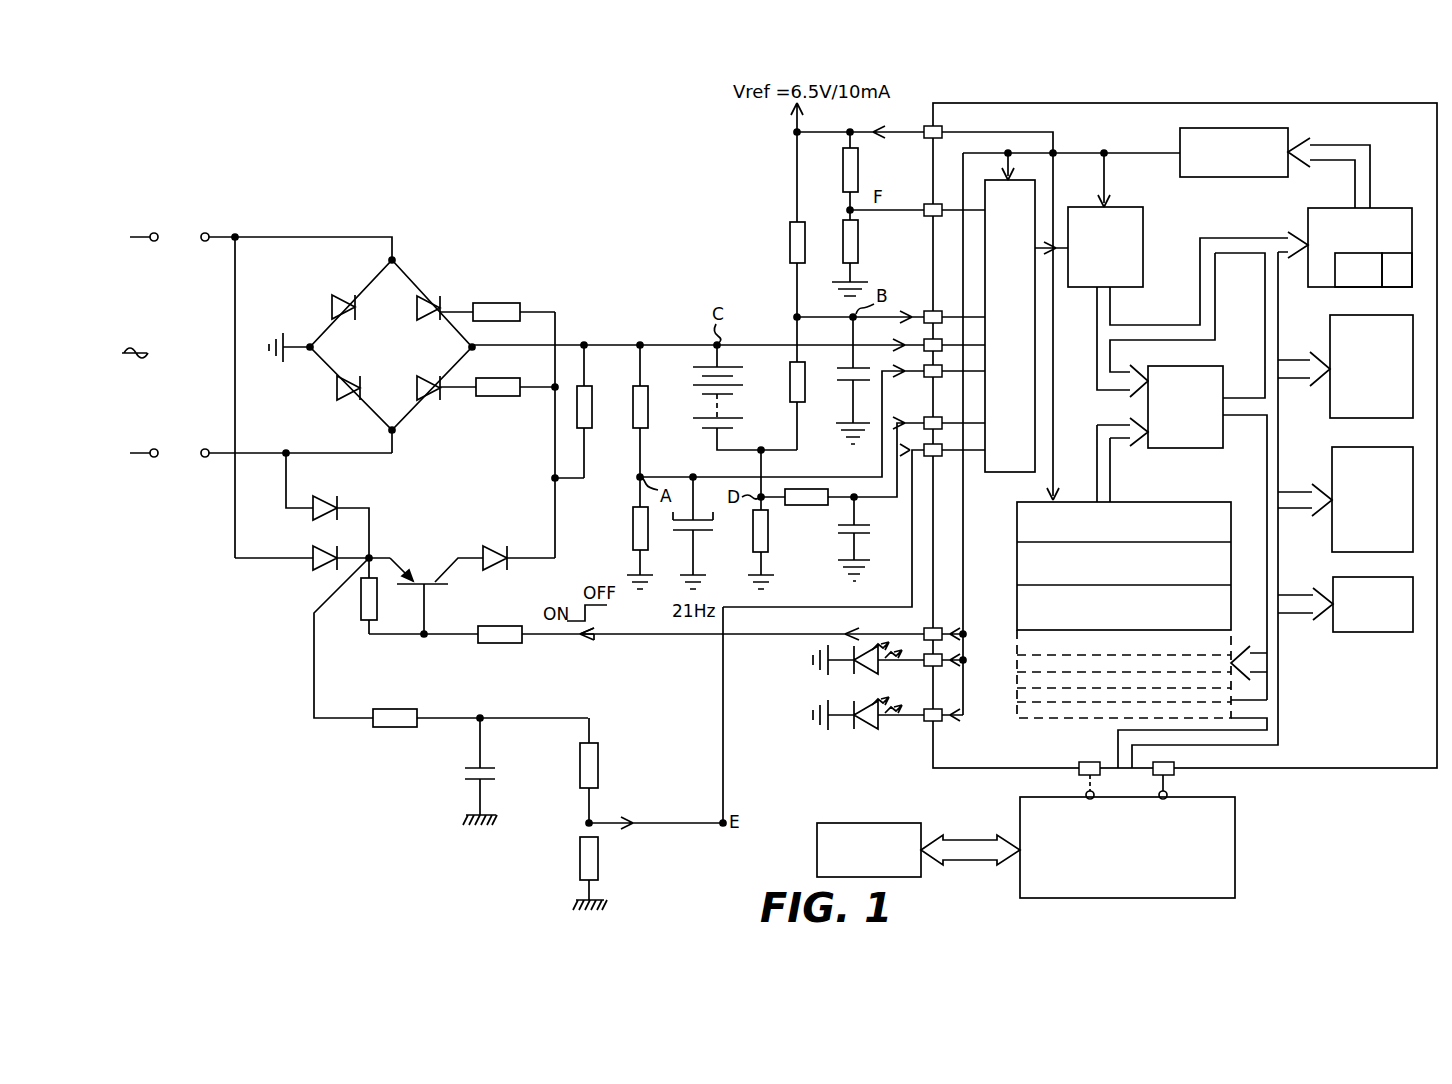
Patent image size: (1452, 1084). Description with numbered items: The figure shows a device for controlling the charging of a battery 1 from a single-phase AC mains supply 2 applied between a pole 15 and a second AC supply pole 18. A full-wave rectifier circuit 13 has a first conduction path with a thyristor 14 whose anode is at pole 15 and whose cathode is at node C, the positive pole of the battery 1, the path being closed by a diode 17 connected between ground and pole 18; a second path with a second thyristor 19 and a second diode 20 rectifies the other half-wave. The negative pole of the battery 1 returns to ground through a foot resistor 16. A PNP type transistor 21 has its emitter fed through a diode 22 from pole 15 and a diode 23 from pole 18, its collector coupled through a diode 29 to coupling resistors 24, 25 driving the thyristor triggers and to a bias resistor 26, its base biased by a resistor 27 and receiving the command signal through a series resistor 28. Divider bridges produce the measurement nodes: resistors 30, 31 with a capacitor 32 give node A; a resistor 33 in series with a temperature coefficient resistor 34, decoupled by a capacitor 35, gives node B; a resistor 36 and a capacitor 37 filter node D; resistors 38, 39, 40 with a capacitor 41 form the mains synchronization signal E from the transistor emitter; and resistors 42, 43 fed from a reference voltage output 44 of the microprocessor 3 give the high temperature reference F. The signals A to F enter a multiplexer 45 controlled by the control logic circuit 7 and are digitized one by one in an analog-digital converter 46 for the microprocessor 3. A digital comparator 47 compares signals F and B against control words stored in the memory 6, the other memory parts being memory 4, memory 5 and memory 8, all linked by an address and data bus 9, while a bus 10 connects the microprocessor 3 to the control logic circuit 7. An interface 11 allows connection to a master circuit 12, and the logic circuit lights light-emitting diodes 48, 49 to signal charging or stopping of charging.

The battery 1 is at (670, 368).
The AC mains supply 2 is at (135, 349).
The microprocessor 3 is at (1390, 220).
The memory 4 is at (1410, 334).
The memory 5 is at (1412, 466).
The memory 6 is at (1217, 508).
The control logic circuit 7 is at (1284, 148).
The memory 8 is at (1410, 592).
The address and data bus 9 is at (1230, 238).
The bus 10 is at (1334, 164).
The interface 11 is at (1235, 822).
The master circuit 12 is at (886, 823).
The full-wave rectifier circuit 13 is at (372, 345).
The thyristor 14 is at (444, 308).
The pole 15 is at (207, 236).
The foot resistor 16 is at (748, 544).
The diode 17 is at (344, 398).
The second AC supply pole 18 is at (203, 458).
The second thyristor 19 is at (450, 414).
The second diode 20 is at (332, 308).
The PNP type transistor 21 is at (416, 582).
The diode 22 is at (312, 576).
The diode 23 is at (320, 511).
The coupling resistor 24 is at (512, 303).
The coupling resistor 25 is at (503, 396).
The bias resistor 26 is at (597, 408).
The resistor 27 is at (358, 626).
The series resistor 28 is at (505, 646).
The diode 29 is at (495, 548).
The resistor 30 is at (648, 418).
The resistor 31 is at (632, 526).
The capacitor 32 is at (677, 529).
The resistor 33 is at (790, 241).
The temperature coefficient resistor 34 is at (790, 384).
The capacitor 35 is at (850, 380).
The resistor 36 is at (801, 505).
The capacitor 37 is at (865, 534).
The resistor 38 is at (388, 728).
The resistor 39 is at (598, 766).
The resistor 40 is at (598, 860).
The capacitor 41 is at (462, 782).
The resistor 42 is at (842, 170).
The resistor 43 is at (858, 248).
The reference voltage output 44 is at (926, 138).
The multiplexer 45 is at (1036, 202).
The analog-digital converter 46 is at (1143, 250).
The digital comparator 47 is at (1208, 376).
The light-emitting diode 48 is at (864, 664).
The light-emitting diode 49 is at (866, 720).